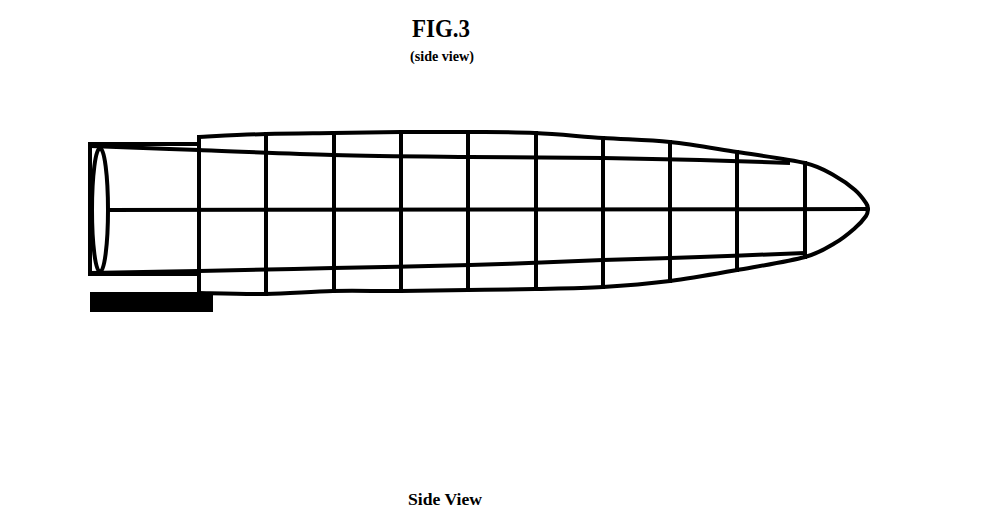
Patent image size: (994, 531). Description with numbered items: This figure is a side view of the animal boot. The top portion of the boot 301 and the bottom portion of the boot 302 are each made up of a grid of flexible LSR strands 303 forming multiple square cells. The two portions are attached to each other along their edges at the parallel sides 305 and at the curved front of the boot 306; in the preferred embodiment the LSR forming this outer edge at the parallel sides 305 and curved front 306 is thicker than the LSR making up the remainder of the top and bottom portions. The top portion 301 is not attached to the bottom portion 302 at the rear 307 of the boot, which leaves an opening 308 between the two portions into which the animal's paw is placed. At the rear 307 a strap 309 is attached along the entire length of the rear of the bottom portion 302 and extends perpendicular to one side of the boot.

The top portion of the boot 301 is at (868, 160).
The bottom portion of the boot 302 is at (868, 213).
The flexible LSR strands 303 is at (268, 239).
The parallel sides 305 is at (568, 215).
The curved front of the boot 306 is at (836, 212).
The rear of the boot 307 is at (72, 210).
The opening 308 is at (98, 199).
The strap 309 is at (150, 316).